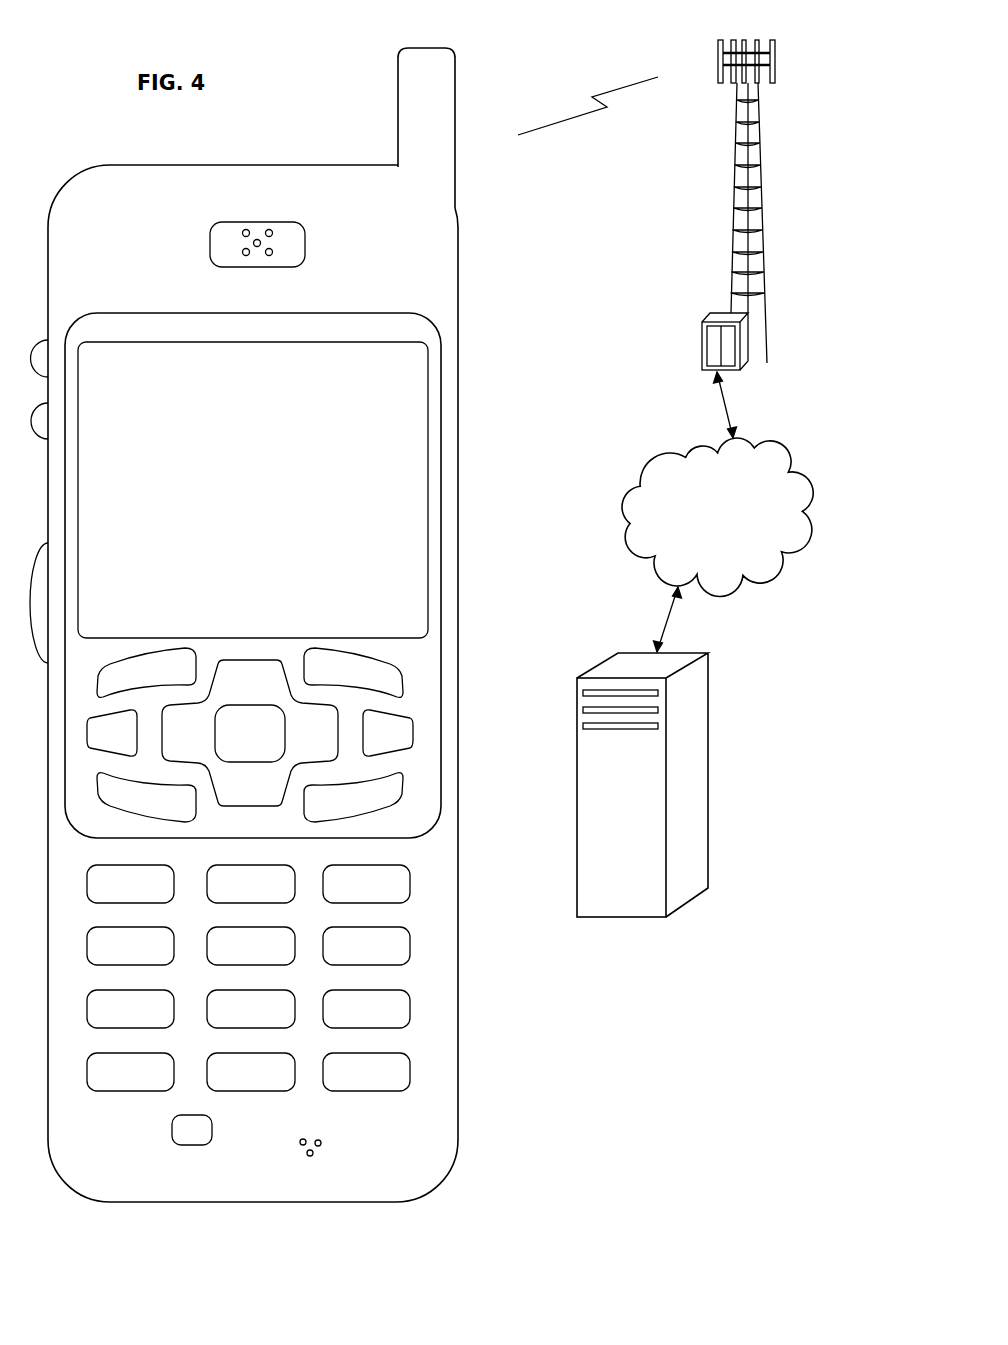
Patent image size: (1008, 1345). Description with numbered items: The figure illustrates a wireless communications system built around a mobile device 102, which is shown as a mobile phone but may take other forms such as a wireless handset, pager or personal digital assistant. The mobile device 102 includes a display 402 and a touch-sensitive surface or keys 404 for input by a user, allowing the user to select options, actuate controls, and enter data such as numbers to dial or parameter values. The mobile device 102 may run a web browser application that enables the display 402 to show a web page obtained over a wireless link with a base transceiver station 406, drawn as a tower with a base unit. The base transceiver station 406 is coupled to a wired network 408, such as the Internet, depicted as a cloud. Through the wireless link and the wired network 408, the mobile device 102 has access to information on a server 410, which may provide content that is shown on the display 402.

The mobile device 102 is at (92, 1196).
The display 402 is at (442, 352).
The keys 404 is at (466, 1097).
The base transceiver station 406 is at (733, 221).
The wired network 408 is at (644, 561).
The server 410 is at (618, 917).